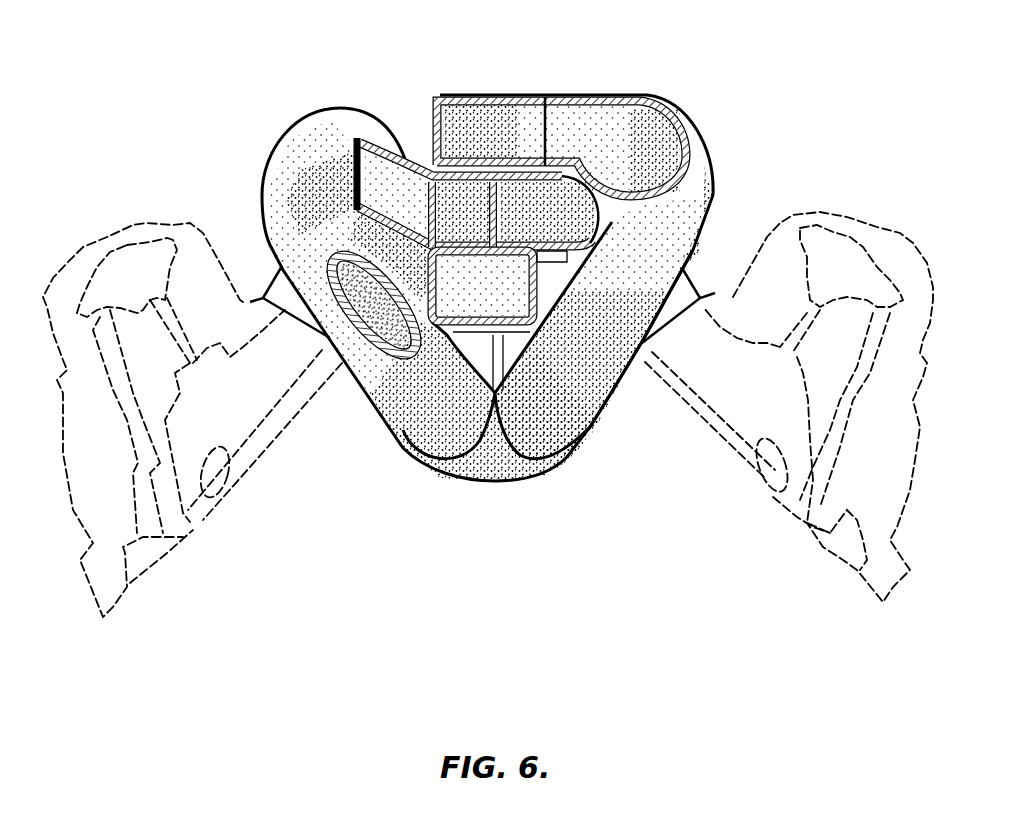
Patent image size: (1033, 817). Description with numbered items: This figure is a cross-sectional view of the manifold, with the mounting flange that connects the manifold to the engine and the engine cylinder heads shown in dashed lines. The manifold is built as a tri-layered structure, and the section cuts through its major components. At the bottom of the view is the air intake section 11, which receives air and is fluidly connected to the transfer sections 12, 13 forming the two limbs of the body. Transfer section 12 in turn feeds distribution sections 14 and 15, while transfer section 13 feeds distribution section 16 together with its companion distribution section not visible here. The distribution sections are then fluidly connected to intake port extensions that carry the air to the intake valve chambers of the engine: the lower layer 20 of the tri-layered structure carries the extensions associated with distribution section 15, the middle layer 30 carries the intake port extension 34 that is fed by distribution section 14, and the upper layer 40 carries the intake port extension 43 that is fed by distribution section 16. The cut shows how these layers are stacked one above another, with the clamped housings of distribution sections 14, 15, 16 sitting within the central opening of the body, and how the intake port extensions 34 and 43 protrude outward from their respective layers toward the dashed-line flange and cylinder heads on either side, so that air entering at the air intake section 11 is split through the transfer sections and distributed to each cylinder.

The air intake section 11 is at (490, 481).
The transfer section 12 is at (413, 417).
The transfer section 13 is at (593, 420).
The distribution section 14 is at (353, 160).
The distribution section 15 is at (471, 305).
The distribution section 16 is at (481, 127).
The lower layer 20 is at (500, 287).
The middle layer 30 is at (570, 252).
The intake port extension 34 is at (685, 312).
The upper layer 40 is at (533, 124).
The intake port extension 43 is at (408, 117).